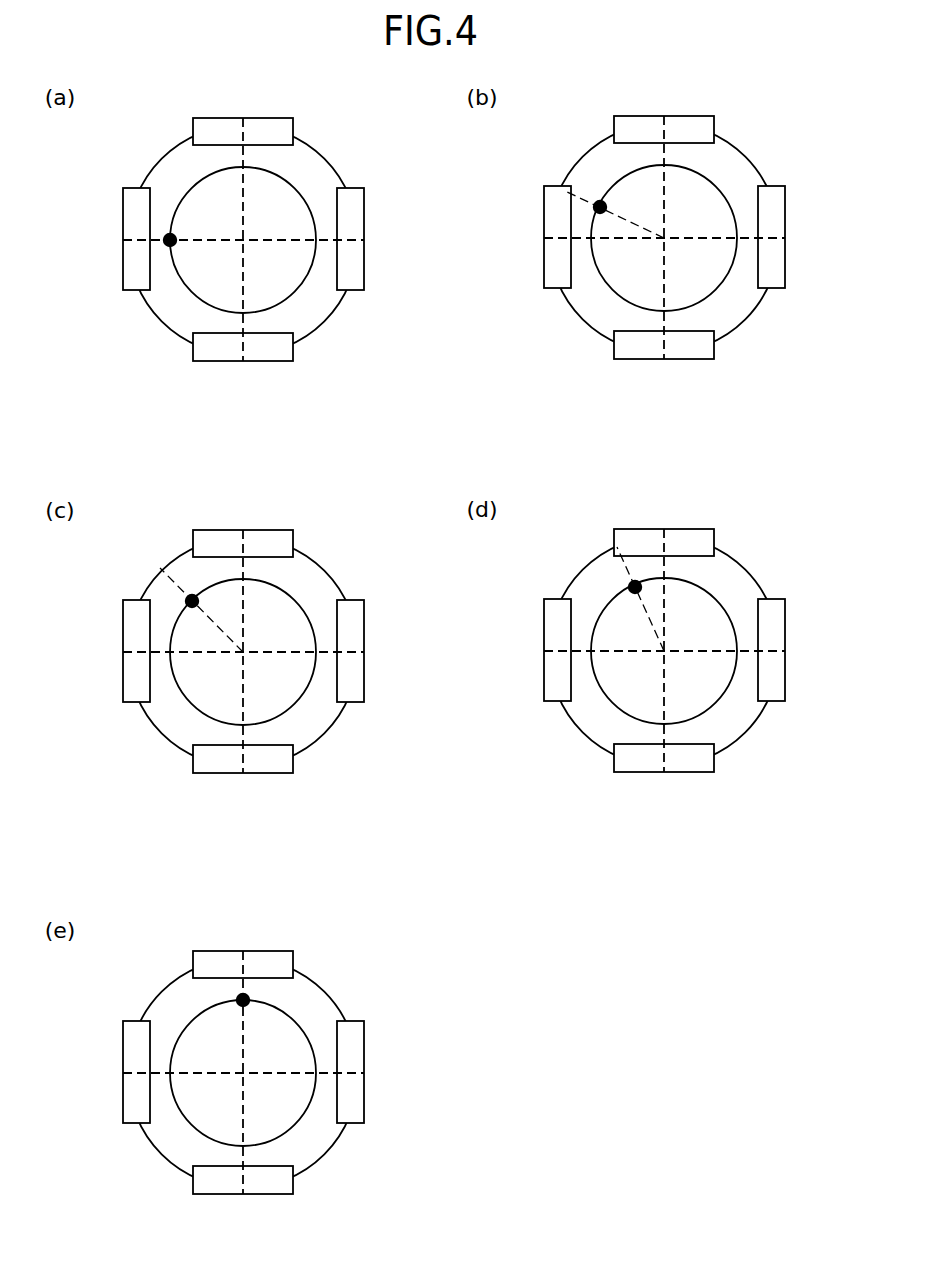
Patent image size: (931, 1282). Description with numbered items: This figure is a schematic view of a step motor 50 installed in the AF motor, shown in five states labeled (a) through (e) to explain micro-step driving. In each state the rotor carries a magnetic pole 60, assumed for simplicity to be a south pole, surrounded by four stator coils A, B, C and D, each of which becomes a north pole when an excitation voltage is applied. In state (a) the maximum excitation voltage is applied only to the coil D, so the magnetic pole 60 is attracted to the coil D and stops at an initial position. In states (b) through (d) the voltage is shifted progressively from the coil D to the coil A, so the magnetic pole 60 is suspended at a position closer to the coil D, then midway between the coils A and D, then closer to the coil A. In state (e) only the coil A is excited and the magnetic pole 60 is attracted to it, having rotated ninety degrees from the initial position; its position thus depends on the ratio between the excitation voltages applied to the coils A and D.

The step motor 50 is at (323, 152).
The magnetic pole 60 is at (168, 238).
The stator coil A is at (453, 532).
The stator coil B is at (574, 654).
The stator coil C is at (453, 780).
The stator coil D is at (333, 654).